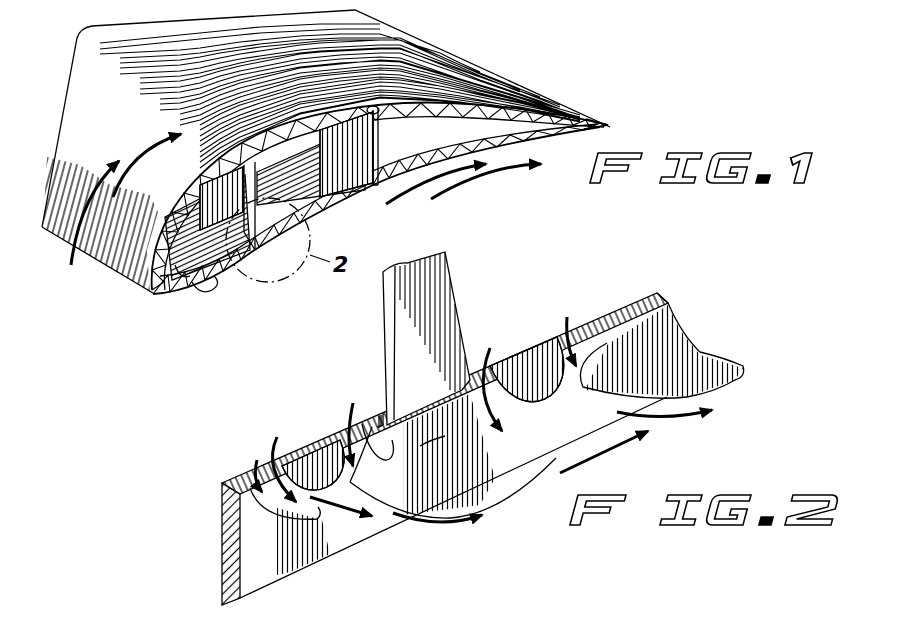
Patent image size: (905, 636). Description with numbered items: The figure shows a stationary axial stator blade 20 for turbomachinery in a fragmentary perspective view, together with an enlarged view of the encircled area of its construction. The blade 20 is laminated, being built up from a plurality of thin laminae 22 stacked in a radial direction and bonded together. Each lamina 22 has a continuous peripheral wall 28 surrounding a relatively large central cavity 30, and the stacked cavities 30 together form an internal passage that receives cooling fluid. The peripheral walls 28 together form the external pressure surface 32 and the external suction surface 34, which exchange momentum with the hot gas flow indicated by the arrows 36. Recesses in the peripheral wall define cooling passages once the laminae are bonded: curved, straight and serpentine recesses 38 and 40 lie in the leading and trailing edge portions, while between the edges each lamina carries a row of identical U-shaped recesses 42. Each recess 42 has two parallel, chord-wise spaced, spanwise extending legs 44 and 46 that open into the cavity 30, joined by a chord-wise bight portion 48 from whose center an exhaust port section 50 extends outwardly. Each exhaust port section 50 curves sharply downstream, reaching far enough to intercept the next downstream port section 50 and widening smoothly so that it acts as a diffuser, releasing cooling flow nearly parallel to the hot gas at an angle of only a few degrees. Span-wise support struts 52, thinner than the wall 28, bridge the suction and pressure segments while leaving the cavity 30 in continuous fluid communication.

In FIG. 1, the stator blade 20 is at (603, 75).
In FIG. 1, the lamina 22 is at (445, 34).
In FIG. 2, the lamina 22 is at (627, 291).
In FIG. 2, the peripheral wall 28 is at (690, 345).
In FIG. 1, the central cavity 30 is at (198, 288).
In FIG. 2, the central cavity 30 is at (523, 337).
In FIG. 1, the external pressure surface 32 is at (367, 203).
In FIG. 2, the external pressure surface 32 is at (310, 580).
In FIG. 1, the external suction surface 34 is at (443, 70).
In FIG. 1, the hot gas fluid flow arrows 36 is at (73, 264).
In FIG. 2, the hot gas fluid flow arrows 36 is at (447, 518).
In FIG. 1, the leading edge recesses 38 is at (147, 272).
In FIG. 1, the trailing edge recesses 40 is at (608, 125).
In FIG. 1, the U-shaped recess 42 is at (373, 104).
In FIG. 2, the U-shaped recess 42 is at (257, 461).
In FIG. 2, the first leg of U-shaped recess 44 is at (420, 446).
In FIG. 2, the second leg of U-shaped recess 46 is at (605, 353).
In FIG. 2, the bight portion 48 is at (315, 512).
In FIG. 2, the exhaust port section 50 is at (358, 530).
In FIG. 1, the support strut 52 is at (385, 137).
In FIG. 2, the support strut 52 is at (438, 371).